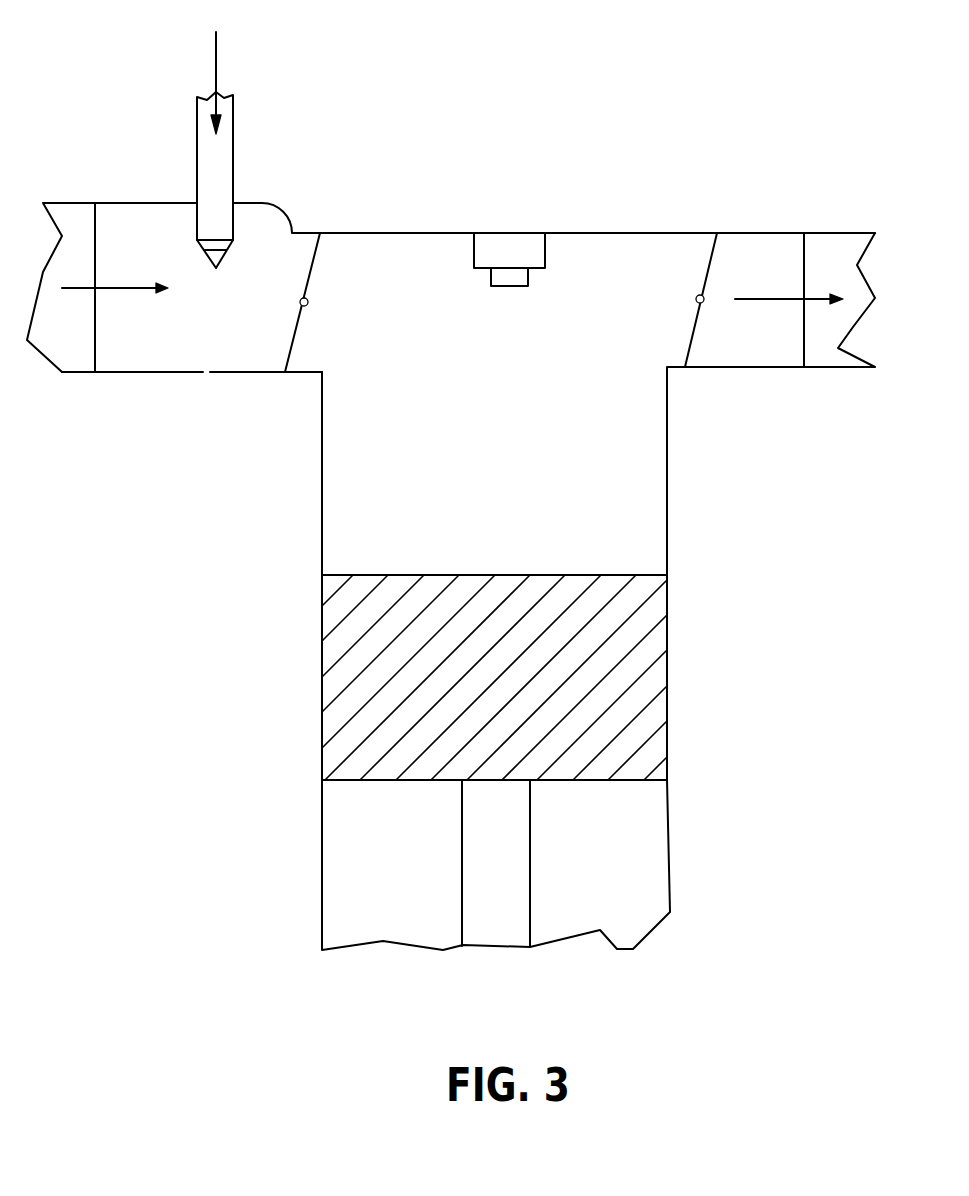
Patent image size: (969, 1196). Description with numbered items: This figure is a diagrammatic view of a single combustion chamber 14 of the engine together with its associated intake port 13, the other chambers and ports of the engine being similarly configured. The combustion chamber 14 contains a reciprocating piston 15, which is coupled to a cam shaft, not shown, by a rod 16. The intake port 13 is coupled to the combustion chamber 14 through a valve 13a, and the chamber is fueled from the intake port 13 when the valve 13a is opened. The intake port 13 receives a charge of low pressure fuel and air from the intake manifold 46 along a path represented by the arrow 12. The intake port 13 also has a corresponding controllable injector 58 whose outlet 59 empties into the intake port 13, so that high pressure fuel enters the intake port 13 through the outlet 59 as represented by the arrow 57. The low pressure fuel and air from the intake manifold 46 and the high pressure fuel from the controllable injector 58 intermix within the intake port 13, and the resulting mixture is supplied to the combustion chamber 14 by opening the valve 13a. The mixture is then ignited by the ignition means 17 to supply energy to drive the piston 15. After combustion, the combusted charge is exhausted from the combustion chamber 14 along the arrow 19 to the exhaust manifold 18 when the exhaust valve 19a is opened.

The arrow 12 is at (117, 290).
The intake port 13 is at (130, 372).
The valve 13a is at (295, 337).
The combustion chamber 14 is at (505, 427).
The reciprocating piston 15 is at (528, 575).
The rod 16 is at (530, 848).
The ignition means 17 is at (522, 262).
The exhaust manifold 18 is at (830, 368).
The arrow 19 is at (770, 297).
The exhaust valve 19a is at (705, 267).
The intake manifold 46 is at (61, 203).
The arrow 57 is at (217, 78).
The controllable injector 58 is at (233, 146).
The outlet 59 is at (217, 250).